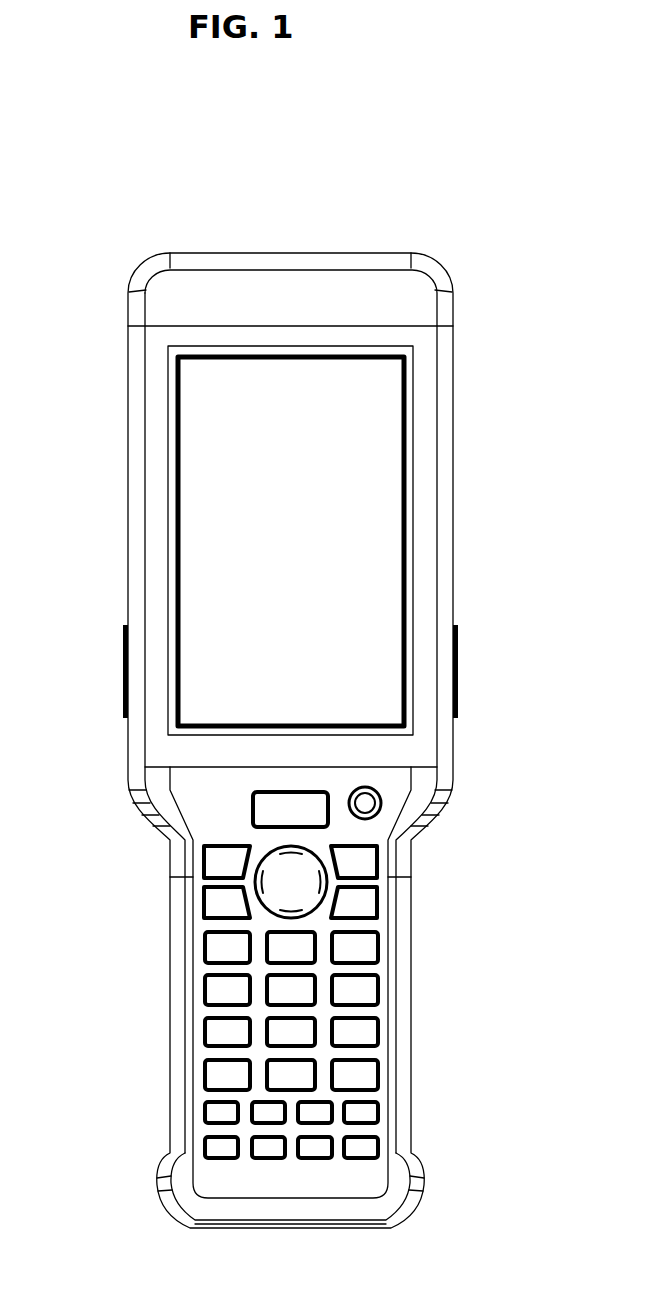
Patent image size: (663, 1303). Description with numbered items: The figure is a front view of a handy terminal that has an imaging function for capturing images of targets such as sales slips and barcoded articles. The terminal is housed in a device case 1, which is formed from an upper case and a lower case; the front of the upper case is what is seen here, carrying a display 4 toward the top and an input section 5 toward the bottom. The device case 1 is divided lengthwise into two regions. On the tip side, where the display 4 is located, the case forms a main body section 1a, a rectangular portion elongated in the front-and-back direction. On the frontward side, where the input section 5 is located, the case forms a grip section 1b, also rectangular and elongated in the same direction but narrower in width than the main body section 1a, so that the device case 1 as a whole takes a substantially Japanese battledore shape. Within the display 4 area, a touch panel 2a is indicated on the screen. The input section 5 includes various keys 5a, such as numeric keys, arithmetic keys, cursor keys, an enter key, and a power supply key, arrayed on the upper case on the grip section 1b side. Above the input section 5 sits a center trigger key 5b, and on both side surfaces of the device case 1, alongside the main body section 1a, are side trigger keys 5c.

The device case 1 is at (135, 261).
The main body section 1a is at (140, 513).
The grip section 1b is at (172, 1042).
The touch panel 2a is at (402, 506).
The display 4 is at (365, 426).
The input section 5 is at (205, 946).
The keys 5a is at (380, 808).
The center trigger key 5b is at (272, 808).
The side trigger keys 5c is at (124, 684).